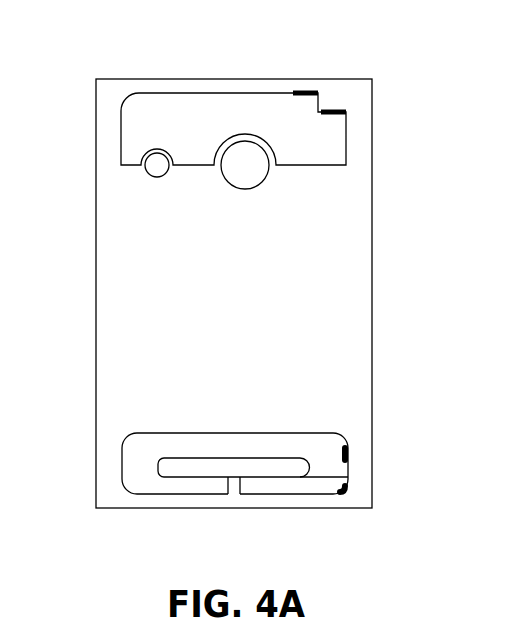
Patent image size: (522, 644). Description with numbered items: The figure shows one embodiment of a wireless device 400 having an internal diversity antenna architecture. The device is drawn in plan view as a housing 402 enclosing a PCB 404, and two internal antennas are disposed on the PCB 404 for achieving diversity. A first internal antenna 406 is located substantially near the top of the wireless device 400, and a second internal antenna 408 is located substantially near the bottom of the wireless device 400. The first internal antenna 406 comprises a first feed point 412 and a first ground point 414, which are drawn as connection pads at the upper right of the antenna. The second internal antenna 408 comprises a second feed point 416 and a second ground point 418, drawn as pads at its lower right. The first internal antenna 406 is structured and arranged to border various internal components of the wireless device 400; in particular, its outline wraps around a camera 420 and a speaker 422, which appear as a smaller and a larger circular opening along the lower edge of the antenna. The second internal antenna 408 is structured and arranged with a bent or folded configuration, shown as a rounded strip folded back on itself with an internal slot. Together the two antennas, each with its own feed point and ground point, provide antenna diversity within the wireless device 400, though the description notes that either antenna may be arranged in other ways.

The wireless device 400 is at (244, 38).
The housing 402 is at (373, 292).
The PCB 404 is at (247, 270).
The first internal antenna 406 is at (244, 123).
The second internal antenna 408 is at (246, 451).
The first feed point 412 is at (320, 92).
The first ground point 414 is at (347, 112).
The second feed point 416 is at (348, 491).
The second ground point 418 is at (349, 455).
The camera 420 is at (147, 174).
The speaker 422 is at (220, 172).